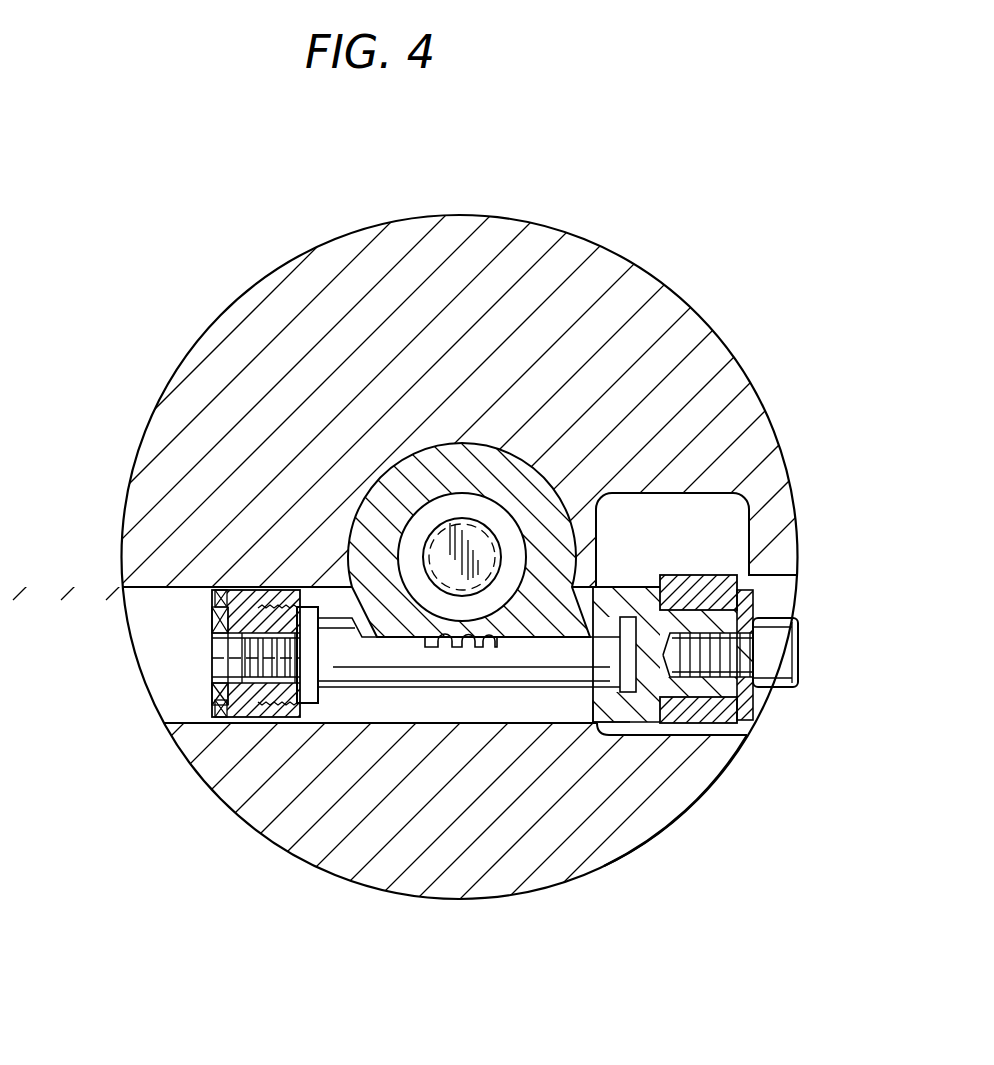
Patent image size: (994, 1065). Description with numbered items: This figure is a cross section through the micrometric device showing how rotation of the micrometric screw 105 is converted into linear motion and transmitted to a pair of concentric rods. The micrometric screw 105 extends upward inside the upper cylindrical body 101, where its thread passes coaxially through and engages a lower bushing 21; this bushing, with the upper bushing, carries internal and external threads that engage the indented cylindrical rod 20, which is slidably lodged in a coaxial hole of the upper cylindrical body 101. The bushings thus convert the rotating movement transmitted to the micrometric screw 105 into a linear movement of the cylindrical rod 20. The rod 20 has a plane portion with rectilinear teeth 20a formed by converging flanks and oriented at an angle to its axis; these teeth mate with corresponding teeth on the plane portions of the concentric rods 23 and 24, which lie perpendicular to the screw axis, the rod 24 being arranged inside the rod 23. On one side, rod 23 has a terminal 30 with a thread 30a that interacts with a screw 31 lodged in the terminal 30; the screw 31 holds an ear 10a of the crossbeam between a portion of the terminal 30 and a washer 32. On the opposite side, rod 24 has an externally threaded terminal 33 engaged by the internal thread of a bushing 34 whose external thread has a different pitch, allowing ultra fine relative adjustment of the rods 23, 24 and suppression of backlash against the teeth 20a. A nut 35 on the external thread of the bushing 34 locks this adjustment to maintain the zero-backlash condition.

The upper cylindrical body 101 is at (570, 250).
The indented cylindrical rod 20 is at (543, 510).
The lower bushing 21 is at (420, 523).
The micrometric screw 105 is at (458, 557).
The rectilinear teeth 20a is at (433, 645).
The concentric rod 24 is at (453, 652).
The concentric rod 23 is at (623, 710).
The terminal 30 is at (700, 622).
The thread 30a is at (800, 652).
The screw 31 is at (773, 690).
The washer 32 is at (742, 733).
The ear 10a is at (690, 805).
The terminal 33 is at (220, 723).
The bushing 34 is at (237, 637).
The nut 35 is at (217, 602).